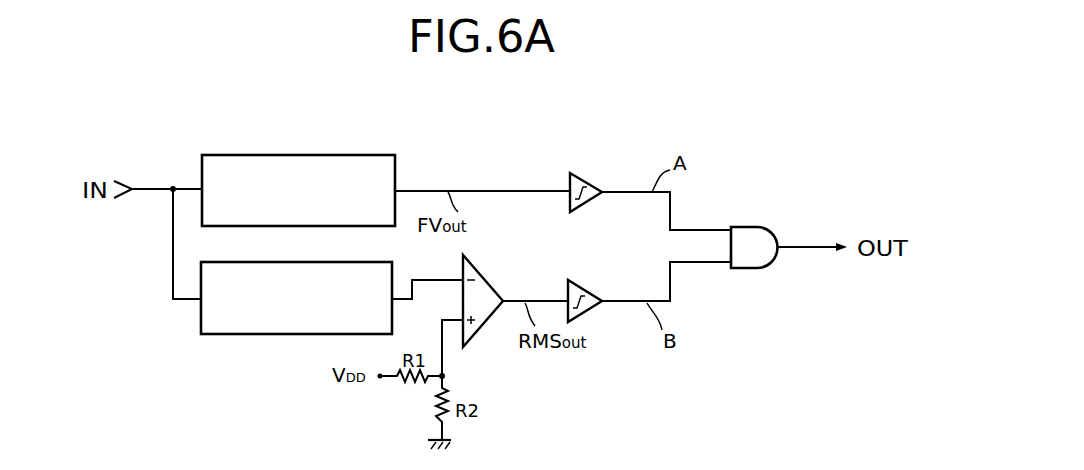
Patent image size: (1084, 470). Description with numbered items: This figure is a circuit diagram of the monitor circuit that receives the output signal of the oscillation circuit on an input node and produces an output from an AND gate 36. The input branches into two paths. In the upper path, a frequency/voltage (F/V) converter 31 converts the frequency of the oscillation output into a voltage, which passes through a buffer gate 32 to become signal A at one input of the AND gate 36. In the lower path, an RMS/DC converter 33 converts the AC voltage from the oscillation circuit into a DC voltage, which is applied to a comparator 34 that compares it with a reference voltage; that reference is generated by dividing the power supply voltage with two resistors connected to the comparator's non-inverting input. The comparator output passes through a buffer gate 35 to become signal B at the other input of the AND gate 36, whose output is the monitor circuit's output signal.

The frequency/voltage (F/V) converter 31 is at (262, 153).
The buffer gate 32 is at (590, 175).
The RMS/DC converter 33 is at (246, 337).
The comparator 34 is at (490, 277).
The buffer gate 35 is at (588, 282).
The AND gate 36 is at (760, 226).